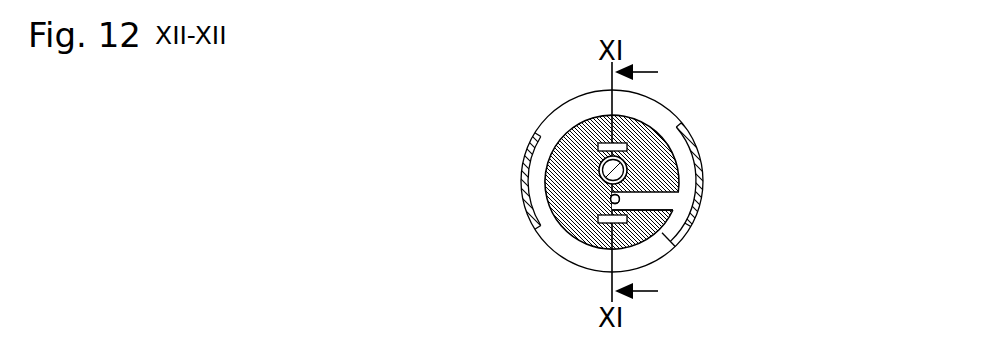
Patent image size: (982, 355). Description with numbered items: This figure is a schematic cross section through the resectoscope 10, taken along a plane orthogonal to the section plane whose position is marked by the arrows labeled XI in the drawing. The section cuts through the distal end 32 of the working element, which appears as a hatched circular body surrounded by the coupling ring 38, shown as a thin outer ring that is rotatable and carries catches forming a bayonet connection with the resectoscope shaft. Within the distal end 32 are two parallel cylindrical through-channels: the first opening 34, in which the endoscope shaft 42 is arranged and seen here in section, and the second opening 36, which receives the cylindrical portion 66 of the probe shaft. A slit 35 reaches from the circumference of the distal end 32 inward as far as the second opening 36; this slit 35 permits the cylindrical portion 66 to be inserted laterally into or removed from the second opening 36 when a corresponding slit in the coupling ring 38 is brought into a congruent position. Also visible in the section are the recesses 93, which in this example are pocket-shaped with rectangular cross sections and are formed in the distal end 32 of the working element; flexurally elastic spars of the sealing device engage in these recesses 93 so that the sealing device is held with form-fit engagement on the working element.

The resectoscope 10 is at (710, 65).
The distal end of the working element 32 is at (588, 125).
The first opening 34 is at (600, 170).
The slit 35 is at (659, 207).
The second opening 36 is at (607, 203).
The coupling ring 38 is at (683, 123).
The endoscope shaft 42 is at (600, 167).
The cylindrical portion of the probe shaft 66 is at (608, 202).
The recesses 93 is at (627, 146).